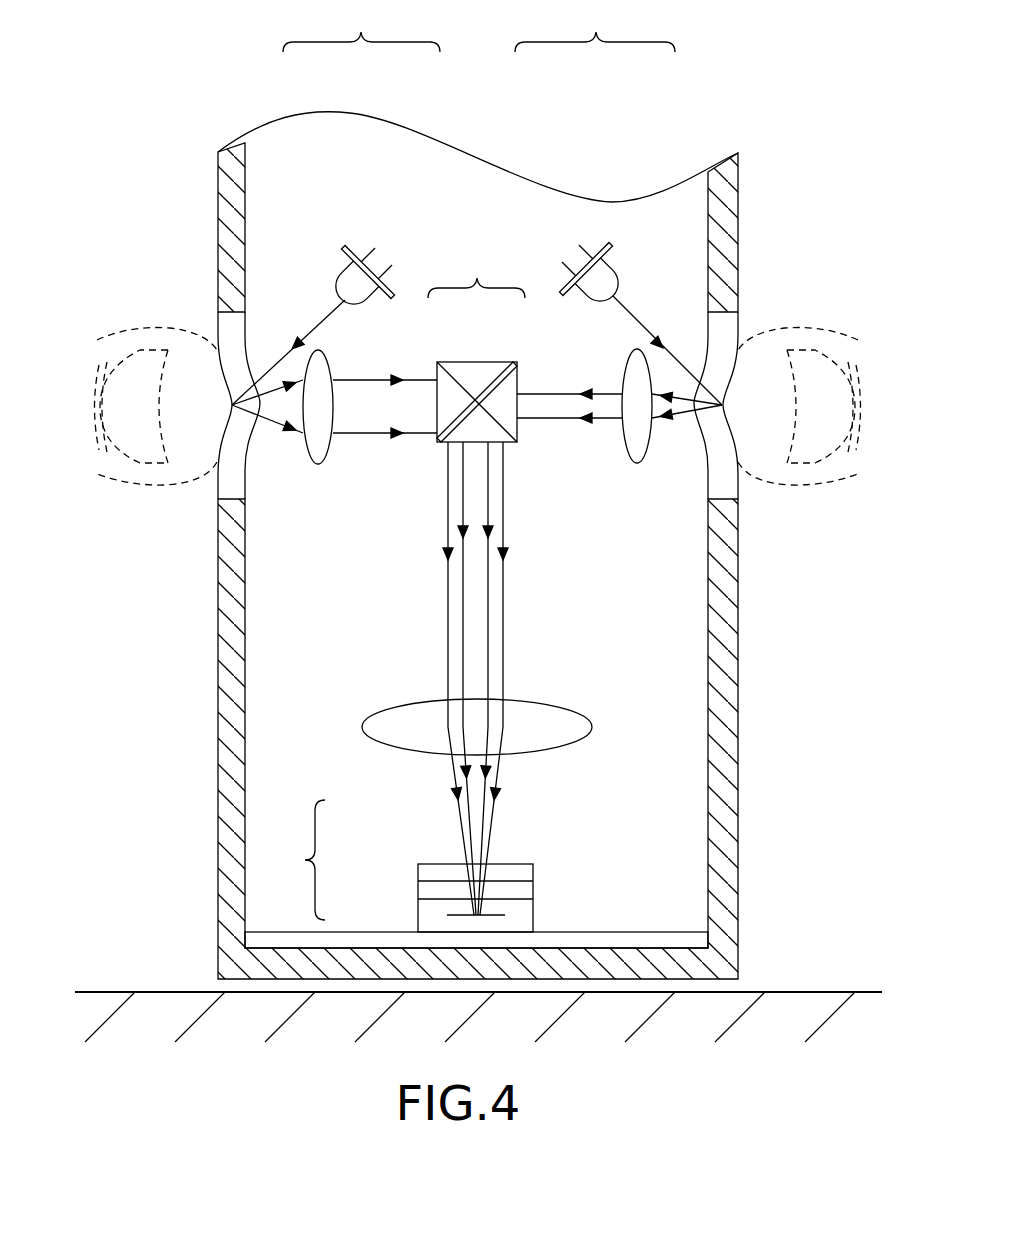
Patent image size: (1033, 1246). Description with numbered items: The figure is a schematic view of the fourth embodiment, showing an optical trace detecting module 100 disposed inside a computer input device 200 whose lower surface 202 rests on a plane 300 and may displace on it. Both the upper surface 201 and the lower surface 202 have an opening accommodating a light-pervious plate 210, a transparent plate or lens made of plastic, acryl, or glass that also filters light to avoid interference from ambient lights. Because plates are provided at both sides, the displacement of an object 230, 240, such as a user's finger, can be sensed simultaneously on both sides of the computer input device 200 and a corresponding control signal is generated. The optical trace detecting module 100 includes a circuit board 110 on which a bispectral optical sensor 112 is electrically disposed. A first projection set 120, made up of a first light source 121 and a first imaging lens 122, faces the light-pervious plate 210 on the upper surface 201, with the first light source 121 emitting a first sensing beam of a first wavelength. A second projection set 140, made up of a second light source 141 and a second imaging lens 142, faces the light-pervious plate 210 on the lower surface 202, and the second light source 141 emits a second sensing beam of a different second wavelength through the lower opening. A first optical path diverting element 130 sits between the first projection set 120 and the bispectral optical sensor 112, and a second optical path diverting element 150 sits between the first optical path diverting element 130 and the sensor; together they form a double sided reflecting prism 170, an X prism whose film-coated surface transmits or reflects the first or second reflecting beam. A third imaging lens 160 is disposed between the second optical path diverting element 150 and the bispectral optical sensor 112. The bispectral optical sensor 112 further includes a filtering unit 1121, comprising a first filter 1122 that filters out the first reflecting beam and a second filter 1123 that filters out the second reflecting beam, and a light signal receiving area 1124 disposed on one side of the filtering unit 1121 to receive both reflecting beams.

The optical trace detecting module 100 is at (604, 592).
The circuit board 110 is at (583, 940).
The bispectral optical sensor 112 is at (437, 866).
The filtering unit 1121 is at (392, 860).
The first filter 1122 is at (435, 868).
The second filter 1123 is at (432, 893).
The light signal receiving area 1124 is at (493, 912).
The first projection set 120 is at (595, 235).
The first light source 121 is at (605, 280).
The first imaging lens 122 is at (633, 367).
The first optical path diverting element 130 is at (496, 372).
The second projection set 140 is at (361, 235).
The second light source 141 is at (347, 283).
The second imaging lens 142 is at (322, 367).
The second optical path diverting element 150 is at (458, 370).
The third imaging lens 160 is at (573, 725).
The double sided reflecting prism 170 is at (476, 346).
The computer input device 200 is at (489, 545).
The upper surface 201 is at (733, 797).
The lower surface 202 is at (222, 833).
The light-pervious plate 210 is at (230, 327).
The object 230 is at (803, 470).
The object 240 is at (152, 470).
The plane 300 is at (823, 988).